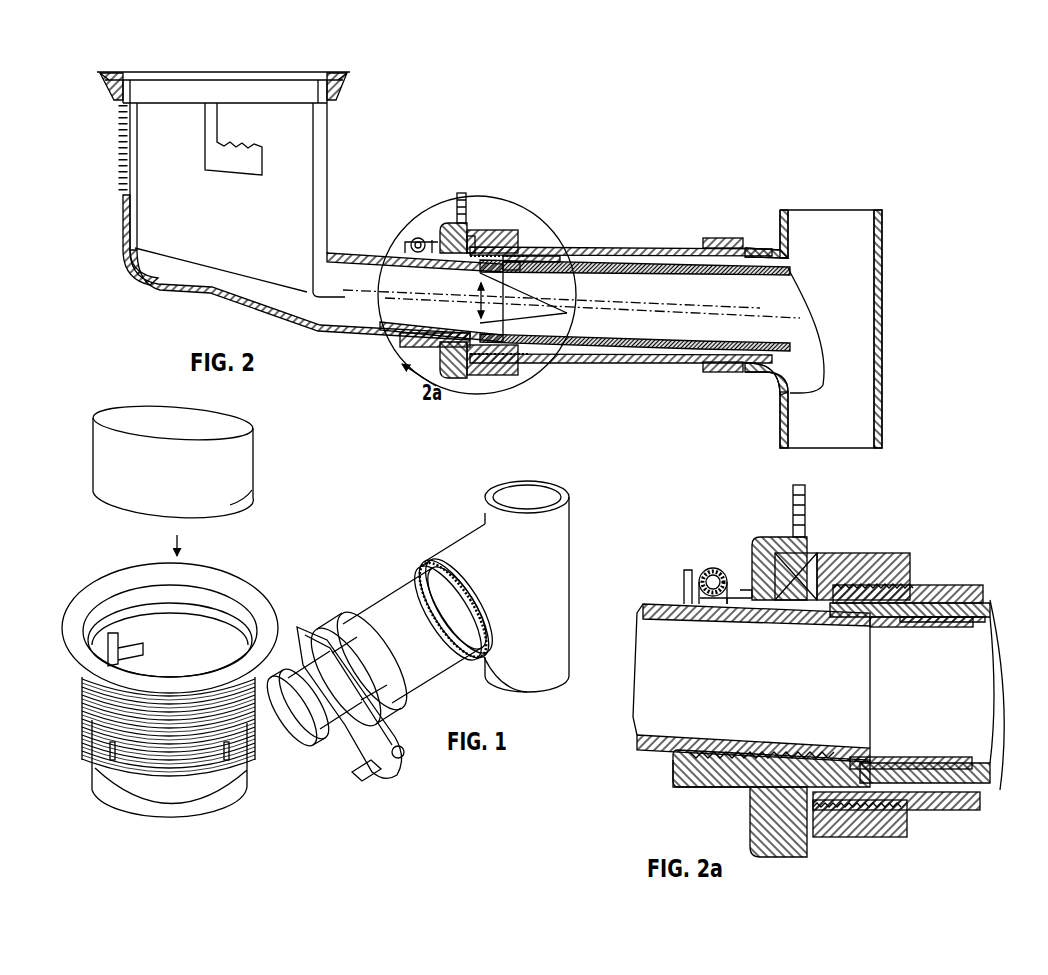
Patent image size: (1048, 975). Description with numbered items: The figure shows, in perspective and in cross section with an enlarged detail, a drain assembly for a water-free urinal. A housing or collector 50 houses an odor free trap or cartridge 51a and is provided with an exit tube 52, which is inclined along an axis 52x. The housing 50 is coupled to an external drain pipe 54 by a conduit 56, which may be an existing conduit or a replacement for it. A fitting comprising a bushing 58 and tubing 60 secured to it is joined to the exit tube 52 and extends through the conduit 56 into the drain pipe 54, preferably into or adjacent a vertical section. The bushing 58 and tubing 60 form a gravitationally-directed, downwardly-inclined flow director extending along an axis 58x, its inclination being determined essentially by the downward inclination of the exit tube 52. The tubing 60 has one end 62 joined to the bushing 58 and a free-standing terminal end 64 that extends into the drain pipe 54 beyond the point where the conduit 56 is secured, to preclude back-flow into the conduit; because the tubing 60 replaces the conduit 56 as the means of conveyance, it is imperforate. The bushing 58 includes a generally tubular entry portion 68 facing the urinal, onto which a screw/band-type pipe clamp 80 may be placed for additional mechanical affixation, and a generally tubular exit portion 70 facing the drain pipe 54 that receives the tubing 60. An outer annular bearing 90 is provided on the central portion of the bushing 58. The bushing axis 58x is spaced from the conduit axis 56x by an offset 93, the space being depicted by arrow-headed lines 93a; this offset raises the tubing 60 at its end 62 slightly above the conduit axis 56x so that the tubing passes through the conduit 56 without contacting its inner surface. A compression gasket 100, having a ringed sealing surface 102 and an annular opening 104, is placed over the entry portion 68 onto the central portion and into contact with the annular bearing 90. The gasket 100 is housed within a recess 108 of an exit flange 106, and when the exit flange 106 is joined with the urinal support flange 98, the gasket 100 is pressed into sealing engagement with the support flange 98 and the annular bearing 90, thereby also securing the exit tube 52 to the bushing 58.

In FIG. 2, the housing or collector 50 is at (163, 290).
In FIG. 1, the housing or collector 50 is at (216, 577).
In FIG. 1, the odor free trap or cartridge 51a is at (240, 456).
In FIG. 2, the exit tube 52 is at (343, 325).
In FIG. 1, the exit tube 52 is at (245, 755).
In FIG. 2A, the exit tube 52 is at (637, 740).
In FIG. 2, the axis of exit tube 52x is at (343, 290).
In FIG. 2, the external drain pipe 54 is at (882, 396).
In FIG. 1, the external drain pipe 54 is at (567, 645).
In FIG. 2, the conduit 56 is at (647, 364).
In FIG. 1, the conduit 56 is at (402, 587).
In FIG. 2A, the conduit 56 is at (910, 808).
In FIG. 2, the conduit axis 56x is at (670, 312).
In FIG. 2, the bushing 58 is at (397, 350).
In FIG. 2A, the bushing 58 is at (672, 786).
In FIG. 2, the bushing axis 58x is at (668, 304).
In FIG. 2, the tubing 60 is at (722, 280).
In FIG. 2A, the tubing 60 is at (937, 640).
In FIG. 2, the end of tubing 62 is at (508, 271).
In FIG. 2A, the end of tubing 62 is at (905, 768).
In FIG. 2, the terminal end 64 is at (789, 302).
In FIG. 2, the entry portion 68 is at (427, 350).
In FIG. 2A, the entry portion 68 is at (727, 787).
In FIG. 2, the exit portion 70 is at (530, 258).
In FIG. 2A, the exit portion 70 is at (924, 618).
In FIG. 2, the pipe clamp 80 is at (413, 242).
In FIG. 1, the pipe clamp 80 is at (278, 637).
In FIG. 2A, the pipe clamp 80 is at (705, 570).
In FIG. 2, the annular bearing 90 is at (470, 236).
In FIG. 2A, the annular bearing 90 is at (810, 553).
In FIG. 2, the offset 93 is at (477, 297).
In FIG. 2, the arrow-headed lines 93a is at (545, 302).
In FIG. 2, the urinal support flange 98 is at (500, 233).
In FIG. 1, the urinal support flange 98 is at (335, 637).
In FIG. 2A, the urinal support flange 98 is at (867, 556).
In FIG. 2, the compression gasket 100 is at (447, 227).
In FIG. 2A, the compression gasket 100 is at (777, 547).
In FIG. 2, the ringed sealing surface 102 is at (498, 367).
In FIG. 2A, the ringed sealing surface 102 is at (843, 817).
In FIG. 2, the annular opening 104 is at (432, 240).
In FIG. 2A, the annular opening 104 is at (753, 547).
In FIG. 2, the exit flange 106 is at (465, 195).
In FIG. 2A, the exit flange 106 is at (802, 485).
In FIG. 2, the recess 108 is at (450, 380).
In FIG. 2A, the recess 108 is at (767, 817).